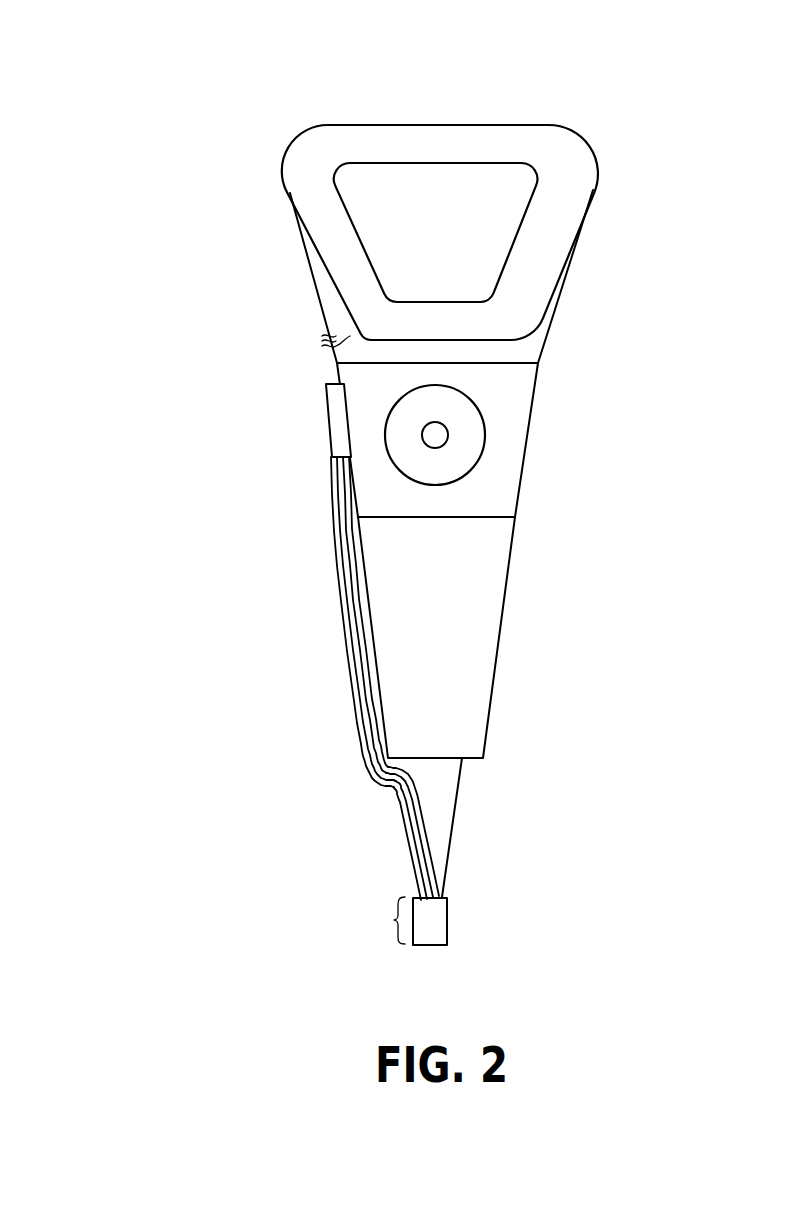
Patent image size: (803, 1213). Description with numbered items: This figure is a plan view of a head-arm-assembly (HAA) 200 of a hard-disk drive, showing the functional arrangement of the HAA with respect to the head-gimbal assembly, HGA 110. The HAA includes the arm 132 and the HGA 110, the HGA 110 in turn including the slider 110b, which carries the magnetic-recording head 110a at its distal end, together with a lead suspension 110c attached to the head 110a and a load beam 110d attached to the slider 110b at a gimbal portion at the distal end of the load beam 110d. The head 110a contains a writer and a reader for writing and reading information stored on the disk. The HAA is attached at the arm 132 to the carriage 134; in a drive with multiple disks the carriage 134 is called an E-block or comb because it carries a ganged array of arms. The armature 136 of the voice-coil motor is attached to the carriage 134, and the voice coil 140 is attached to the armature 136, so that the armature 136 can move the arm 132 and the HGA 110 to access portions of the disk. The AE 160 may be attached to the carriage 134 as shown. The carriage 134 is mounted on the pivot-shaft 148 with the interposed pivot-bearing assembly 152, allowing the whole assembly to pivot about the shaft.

The handheld controller 200 is at (107, 112).
The voice coil 140 is at (337, 257).
The armature 136 is at (337, 315).
The AE 160 is at (337, 427).
The pivot-shaft 148 is at (435, 433).
The pivot-bearing assembly 152 is at (467, 445).
The carriage 134 is at (490, 485).
The arm 132 is at (430, 598).
The HGA 110 is at (304, 701).
The magnetic-recording head 110a is at (238, 717).
The slider 110b is at (397, 920).
The lead suspension 110c is at (410, 830).
The load beam 110d is at (433, 795).